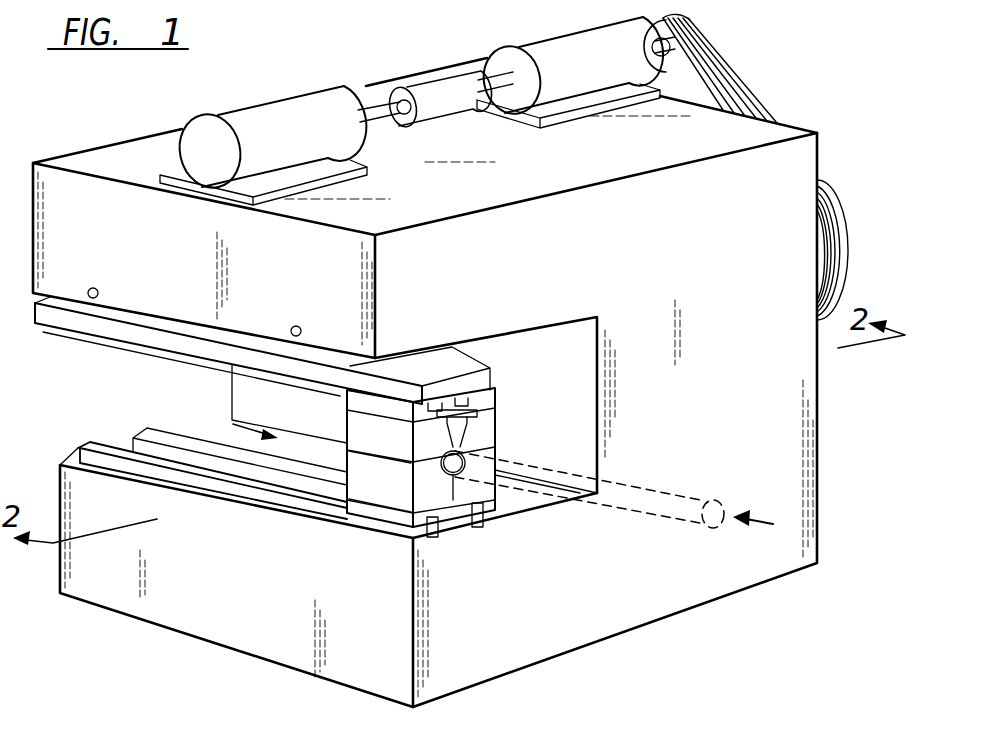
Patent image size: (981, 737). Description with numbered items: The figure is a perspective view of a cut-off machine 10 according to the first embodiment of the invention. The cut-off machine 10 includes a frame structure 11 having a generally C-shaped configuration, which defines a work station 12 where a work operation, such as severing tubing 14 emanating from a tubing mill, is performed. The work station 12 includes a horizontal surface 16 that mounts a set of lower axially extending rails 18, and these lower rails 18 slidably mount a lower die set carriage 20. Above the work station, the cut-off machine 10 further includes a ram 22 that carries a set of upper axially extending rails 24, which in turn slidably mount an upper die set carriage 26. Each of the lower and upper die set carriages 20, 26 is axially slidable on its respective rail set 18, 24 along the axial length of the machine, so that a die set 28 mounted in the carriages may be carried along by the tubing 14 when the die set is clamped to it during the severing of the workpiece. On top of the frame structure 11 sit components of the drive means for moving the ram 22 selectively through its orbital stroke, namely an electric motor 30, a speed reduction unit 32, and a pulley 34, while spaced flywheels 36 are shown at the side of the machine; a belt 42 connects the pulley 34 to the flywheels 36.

The cut-off machine 10 is at (118, 200).
The frame structure 11 is at (783, 417).
The work station 12 is at (232, 422).
The tubing 14 is at (641, 483).
The horizontal surface 16 is at (518, 503).
The lower axially extending rails 18 is at (90, 457).
The lower die set carriage 20 is at (377, 507).
The ram 22 is at (107, 340).
The upper axially extending rails 24 is at (475, 389).
The upper die set carriage 26 is at (493, 400).
The die set 28 is at (374, 461).
The electric motor 30 is at (299, 138).
The speed reduction unit 32 is at (594, 74).
The pulley 34 is at (683, 17).
The spaced flywheels 36 is at (828, 229).
The belt 42 is at (733, 82).